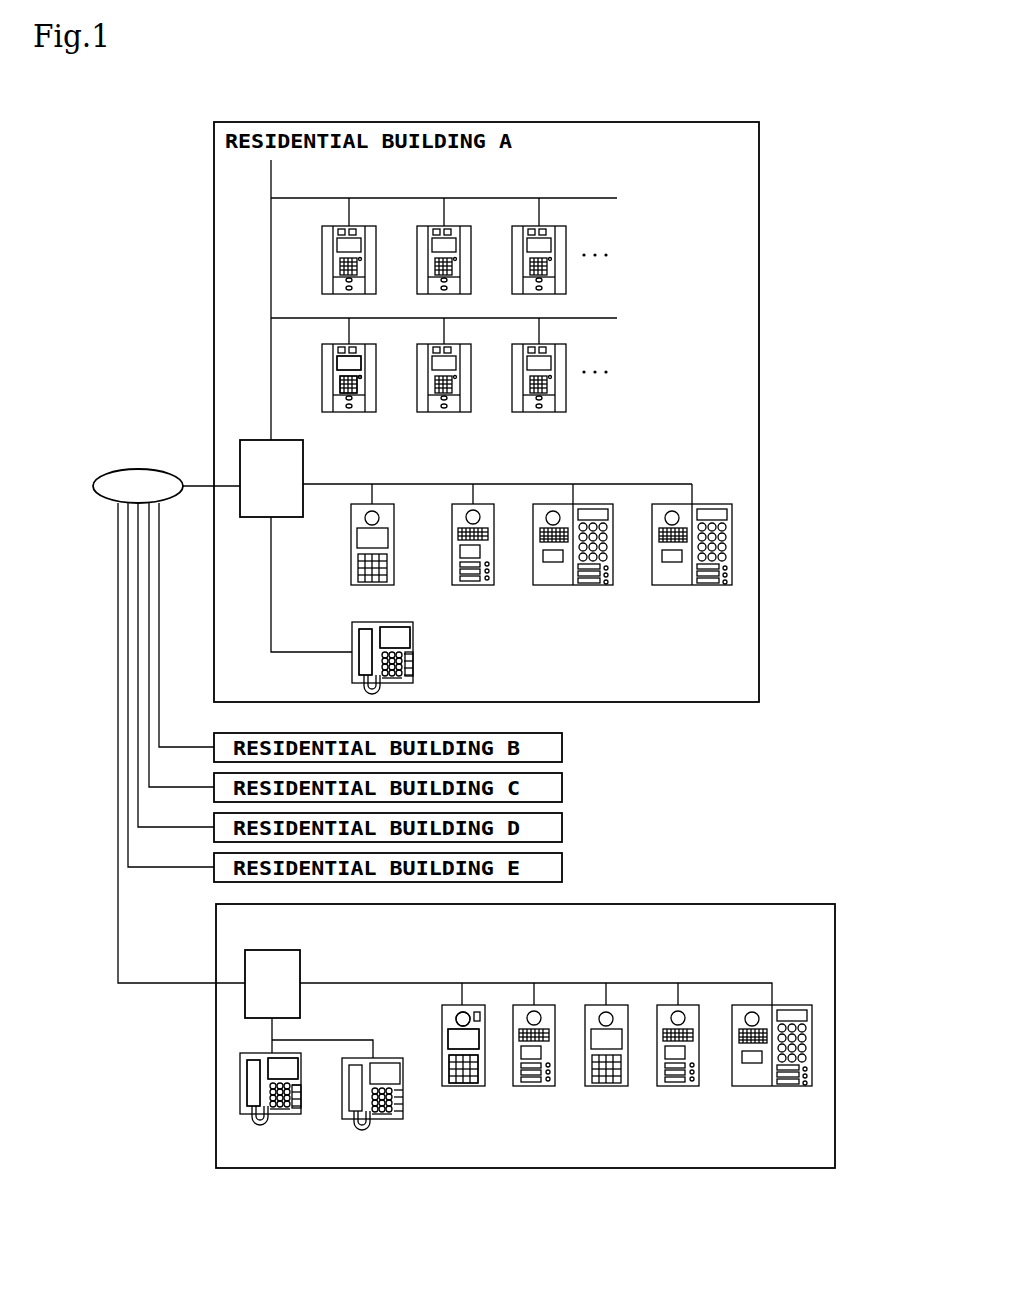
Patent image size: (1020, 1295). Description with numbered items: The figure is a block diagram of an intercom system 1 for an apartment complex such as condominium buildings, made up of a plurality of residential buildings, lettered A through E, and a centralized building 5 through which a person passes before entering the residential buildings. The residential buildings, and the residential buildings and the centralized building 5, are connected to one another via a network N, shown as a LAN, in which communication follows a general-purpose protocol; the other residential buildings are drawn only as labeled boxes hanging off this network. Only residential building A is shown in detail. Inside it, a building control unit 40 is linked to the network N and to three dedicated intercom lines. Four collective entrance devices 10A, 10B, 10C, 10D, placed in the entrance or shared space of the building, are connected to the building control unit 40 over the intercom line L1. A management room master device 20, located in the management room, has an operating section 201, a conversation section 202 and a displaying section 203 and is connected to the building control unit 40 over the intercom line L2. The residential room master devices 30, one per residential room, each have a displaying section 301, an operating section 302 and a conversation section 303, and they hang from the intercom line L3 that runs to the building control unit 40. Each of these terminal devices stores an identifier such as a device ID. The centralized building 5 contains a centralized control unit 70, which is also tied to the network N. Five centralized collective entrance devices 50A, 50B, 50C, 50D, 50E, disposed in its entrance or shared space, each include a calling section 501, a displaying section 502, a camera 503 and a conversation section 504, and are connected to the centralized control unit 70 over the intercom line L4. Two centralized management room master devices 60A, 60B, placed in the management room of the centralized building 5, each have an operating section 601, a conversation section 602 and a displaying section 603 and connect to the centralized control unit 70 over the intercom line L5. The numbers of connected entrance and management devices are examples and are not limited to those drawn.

The intercom system 1 is at (773, 256).
The centralized building 5 is at (758, 903).
The network N is at (133, 469).
The residential room master device 30 is at (376, 226).
The displaying section 301 is at (350, 367).
The operating section 302 is at (357, 383).
The conversation section 303 is at (366, 391).
The building control unit 40 is at (240, 452).
The intercom line L1 is at (340, 484).
The intercom line L2 is at (272, 558).
The intercom line L3 is at (270, 386).
The intercom line L4 is at (345, 983).
The intercom line L5 is at (272, 1040).
The collective entrance device 10A is at (392, 500).
The collective entrance device 10B is at (488, 504).
The collective entrance device 10C is at (590, 504).
The collective entrance device 10D is at (714, 504).
The management room master device 20 is at (380, 622).
The operating section 201 is at (410, 660).
The conversation section 202 is at (362, 664).
The displaying section 203 is at (398, 636).
The centralized control unit 70 is at (245, 966).
The centralized collective entrance device 50A is at (474, 1005).
The centralized collective entrance device 50B is at (552, 1005).
The centralized collective entrance device 50C is at (620, 1005).
The centralized collective entrance device 50D is at (694, 1005).
The centralized collective entrance device 50E is at (800, 1005).
The calling section 501 is at (462, 1087).
The displaying section 502 is at (452, 1040).
The camera 503 is at (456, 1017).
The conversation section 504 is at (486, 1017).
The centralized management room master device 60A is at (282, 1116).
The centralized management room master device 60B is at (386, 1120).
The operating section 601 is at (298, 1094).
The conversation section 602 is at (255, 1077).
The displaying section 603 is at (290, 1068).